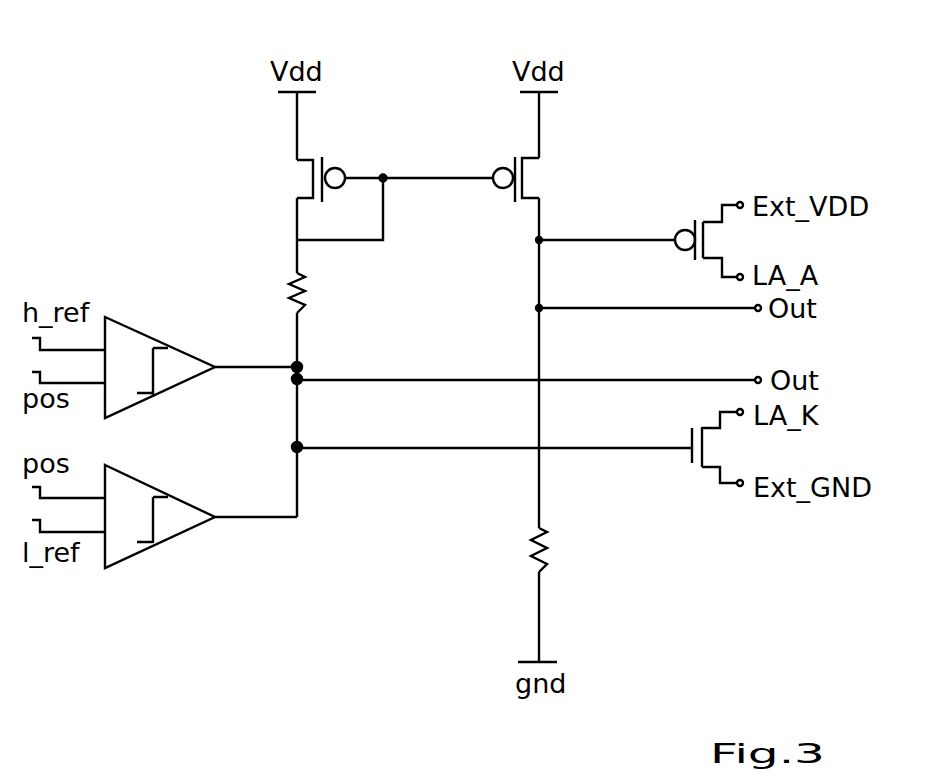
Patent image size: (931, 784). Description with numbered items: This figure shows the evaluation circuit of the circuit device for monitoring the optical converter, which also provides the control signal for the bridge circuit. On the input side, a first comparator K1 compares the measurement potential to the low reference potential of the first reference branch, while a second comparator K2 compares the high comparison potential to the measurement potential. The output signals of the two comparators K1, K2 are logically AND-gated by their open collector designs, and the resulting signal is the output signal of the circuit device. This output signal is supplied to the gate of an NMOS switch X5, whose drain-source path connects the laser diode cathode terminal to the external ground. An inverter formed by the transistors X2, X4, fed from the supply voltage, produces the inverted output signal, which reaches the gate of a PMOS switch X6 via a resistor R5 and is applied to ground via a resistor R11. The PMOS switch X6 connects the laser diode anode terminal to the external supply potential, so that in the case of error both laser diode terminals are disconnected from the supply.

The inverter transistor X2 is at (340, 165).
The inverter transistor X4 is at (461, 165).
The NMOS switch X5 is at (520, 441).
The PMOS switch X6 is at (641, 235).
The resistor R5 is at (276, 291).
The resistor R11 is at (511, 548).
The first comparator K1 is at (164, 513).
The second comparator K2 is at (164, 364).